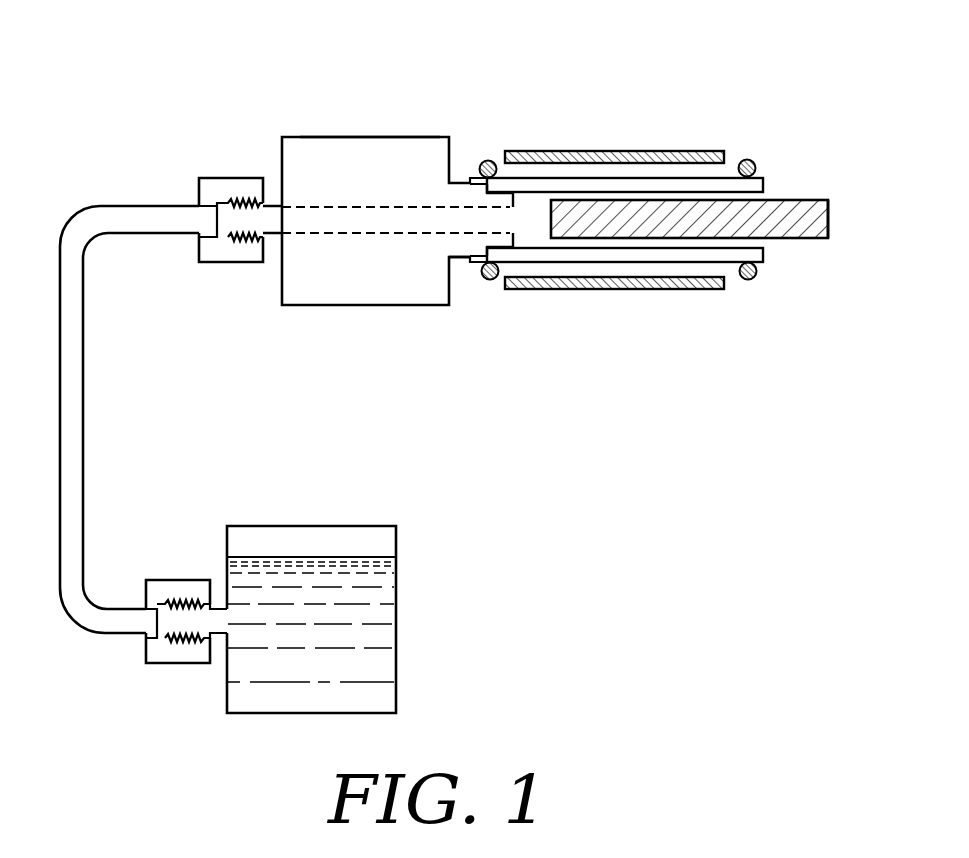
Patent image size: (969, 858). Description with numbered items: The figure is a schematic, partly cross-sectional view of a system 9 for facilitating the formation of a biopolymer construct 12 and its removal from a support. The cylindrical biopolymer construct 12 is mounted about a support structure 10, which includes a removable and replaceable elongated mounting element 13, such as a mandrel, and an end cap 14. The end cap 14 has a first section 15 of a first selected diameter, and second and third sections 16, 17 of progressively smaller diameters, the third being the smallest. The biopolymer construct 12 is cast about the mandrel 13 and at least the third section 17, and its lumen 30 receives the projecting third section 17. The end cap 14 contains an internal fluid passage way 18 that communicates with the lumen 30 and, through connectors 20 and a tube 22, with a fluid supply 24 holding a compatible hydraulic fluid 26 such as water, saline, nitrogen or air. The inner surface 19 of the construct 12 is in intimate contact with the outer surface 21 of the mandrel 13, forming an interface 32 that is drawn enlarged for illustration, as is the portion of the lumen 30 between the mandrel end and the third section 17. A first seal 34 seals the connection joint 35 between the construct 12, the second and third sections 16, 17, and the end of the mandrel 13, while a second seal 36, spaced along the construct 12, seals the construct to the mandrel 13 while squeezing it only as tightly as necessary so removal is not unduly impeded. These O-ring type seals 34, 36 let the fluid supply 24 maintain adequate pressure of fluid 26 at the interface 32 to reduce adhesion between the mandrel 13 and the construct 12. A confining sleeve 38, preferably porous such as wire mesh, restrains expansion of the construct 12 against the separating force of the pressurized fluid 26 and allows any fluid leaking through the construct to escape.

The system 9 is at (640, 50).
The support structure 10 is at (405, 50).
The biopolymer construct 12 is at (596, 183).
The elongated mounting element 13 is at (828, 213).
The end cap 14 is at (384, 284).
The first section 15 is at (343, 137).
The second section 16 is at (463, 261).
The third section 17 is at (503, 244).
The internal fluid passage way 18 is at (313, 217).
The inner surface 19 is at (712, 196).
The connectors 20 is at (241, 250).
The outer surface 21 is at (822, 237).
The tube 22 is at (85, 441).
The fluid supply 24 is at (396, 700).
The hydraulic fluid 26 is at (383, 637).
The lumen 30 is at (545, 229).
The interface 32 is at (765, 196).
The first seal 34 is at (491, 161).
The connection joint 35 is at (476, 178).
The second seal 36 is at (757, 160).
The confining sleeve 38 is at (708, 150).